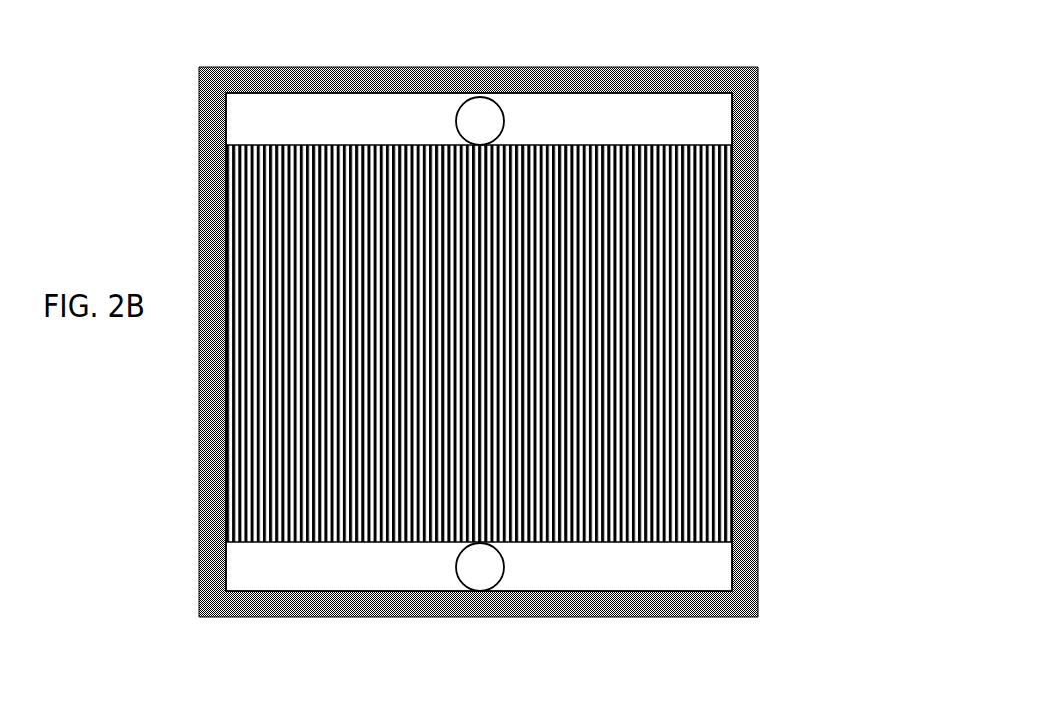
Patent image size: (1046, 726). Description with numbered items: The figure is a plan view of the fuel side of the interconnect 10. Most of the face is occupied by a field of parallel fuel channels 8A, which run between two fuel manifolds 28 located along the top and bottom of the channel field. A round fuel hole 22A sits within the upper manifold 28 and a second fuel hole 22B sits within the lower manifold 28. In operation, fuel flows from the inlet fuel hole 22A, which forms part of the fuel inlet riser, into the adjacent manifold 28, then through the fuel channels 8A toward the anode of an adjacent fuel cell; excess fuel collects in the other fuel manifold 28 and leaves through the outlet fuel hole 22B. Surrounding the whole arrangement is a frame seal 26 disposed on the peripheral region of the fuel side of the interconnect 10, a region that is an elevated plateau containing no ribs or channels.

The interconnect 10 is at (152, 189).
The inlet fuel hole 22A is at (479, 97).
The outlet fuel hole 22B is at (478, 591).
The frame seal 26 is at (758, 463).
The fuel manifold 28 is at (732, 120).
The fuel channels 8A is at (680, 333).